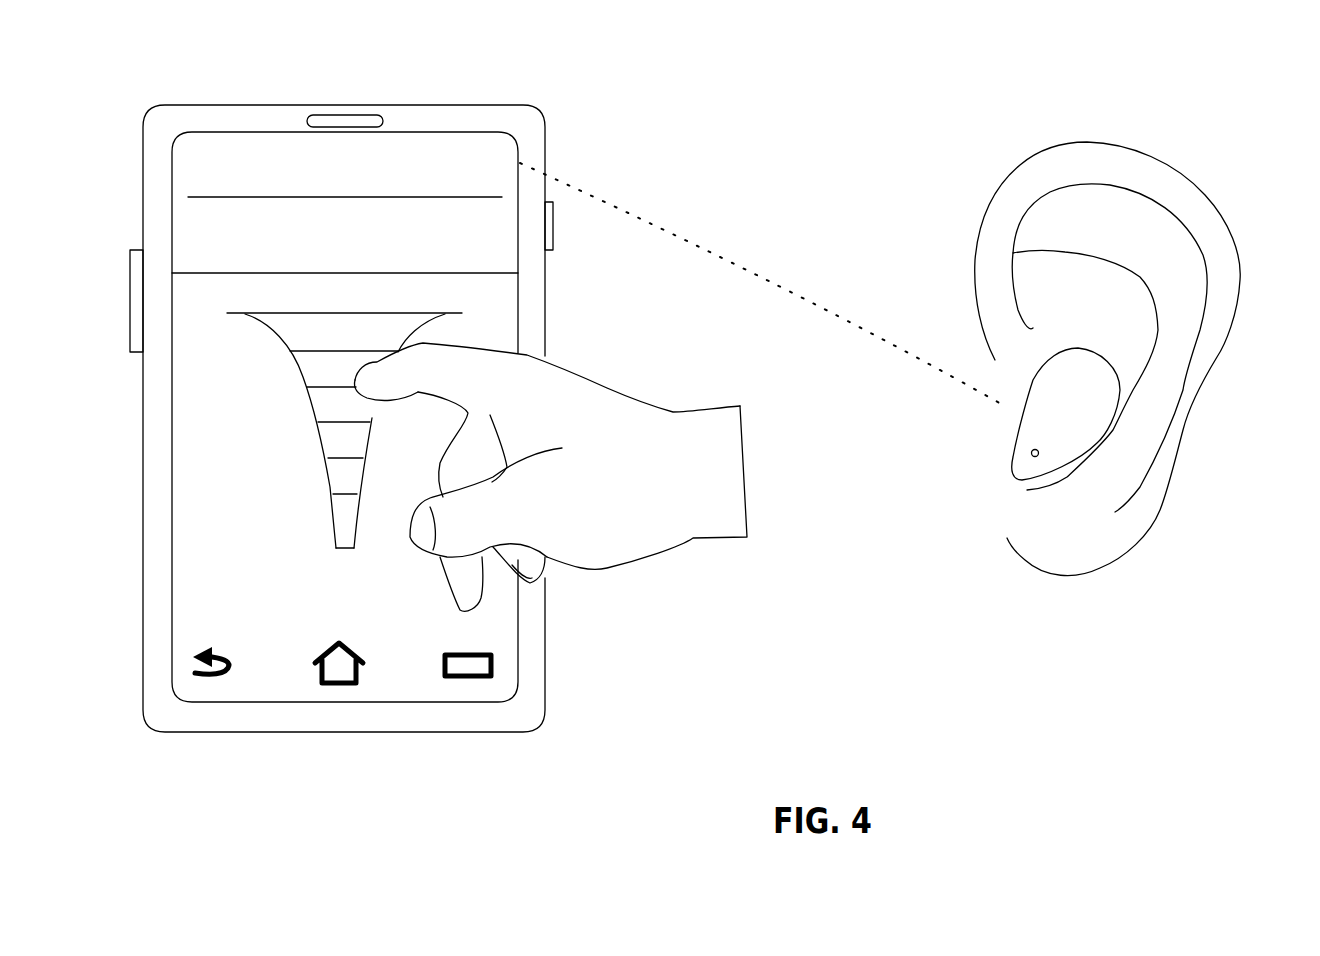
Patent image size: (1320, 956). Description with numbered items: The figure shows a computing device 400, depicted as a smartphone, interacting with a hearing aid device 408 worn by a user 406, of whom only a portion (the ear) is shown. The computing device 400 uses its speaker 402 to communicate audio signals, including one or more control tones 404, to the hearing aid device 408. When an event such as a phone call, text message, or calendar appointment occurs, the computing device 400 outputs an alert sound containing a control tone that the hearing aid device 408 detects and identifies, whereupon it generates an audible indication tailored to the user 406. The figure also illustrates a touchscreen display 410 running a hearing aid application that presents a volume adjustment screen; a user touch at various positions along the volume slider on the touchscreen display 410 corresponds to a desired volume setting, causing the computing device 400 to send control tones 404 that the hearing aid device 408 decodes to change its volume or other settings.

The computing device 400 is at (490, 107).
The speaker 402 is at (318, 112).
The control tones 404 is at (658, 225).
The user 406 is at (1213, 187).
The hearing aid device 408 is at (1013, 445).
The touchscreen display 410 is at (520, 635).